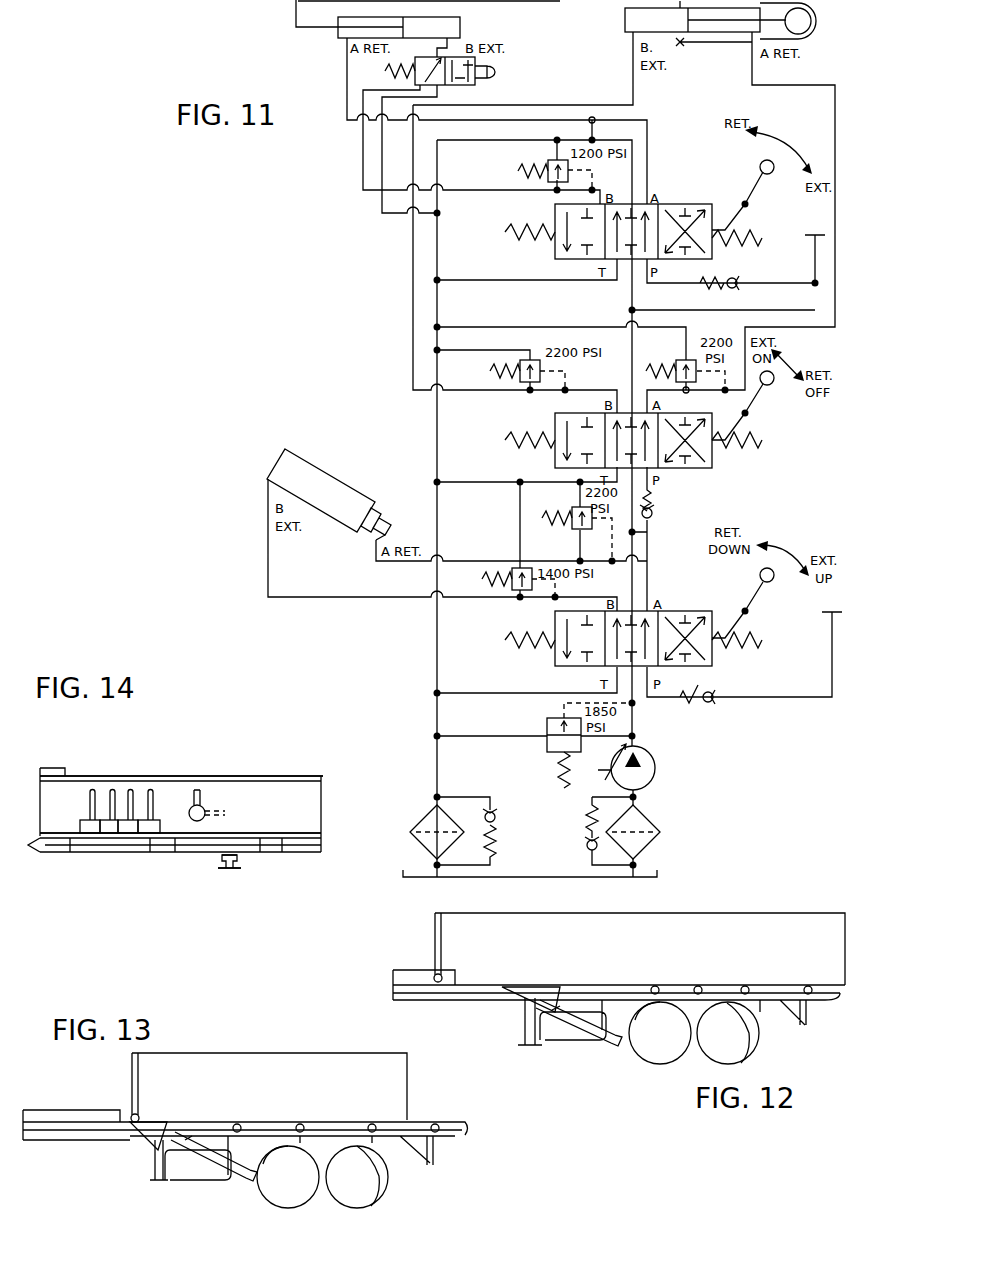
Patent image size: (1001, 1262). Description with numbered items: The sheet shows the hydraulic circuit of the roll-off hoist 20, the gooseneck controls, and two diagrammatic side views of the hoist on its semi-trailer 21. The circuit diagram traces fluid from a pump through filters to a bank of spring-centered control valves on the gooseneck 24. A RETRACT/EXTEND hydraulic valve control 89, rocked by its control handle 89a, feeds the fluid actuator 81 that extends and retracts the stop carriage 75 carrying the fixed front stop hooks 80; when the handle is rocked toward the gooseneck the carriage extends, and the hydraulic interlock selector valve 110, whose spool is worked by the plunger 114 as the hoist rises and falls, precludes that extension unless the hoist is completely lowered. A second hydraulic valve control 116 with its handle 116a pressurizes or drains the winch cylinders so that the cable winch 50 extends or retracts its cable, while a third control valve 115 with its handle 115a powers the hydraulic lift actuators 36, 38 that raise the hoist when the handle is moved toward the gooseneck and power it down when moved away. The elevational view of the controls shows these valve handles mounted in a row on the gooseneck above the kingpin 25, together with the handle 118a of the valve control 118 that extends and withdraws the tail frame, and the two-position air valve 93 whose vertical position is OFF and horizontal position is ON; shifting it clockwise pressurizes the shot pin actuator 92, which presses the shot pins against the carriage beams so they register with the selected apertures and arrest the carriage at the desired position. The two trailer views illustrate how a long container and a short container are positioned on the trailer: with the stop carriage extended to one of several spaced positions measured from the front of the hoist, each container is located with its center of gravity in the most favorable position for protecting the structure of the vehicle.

In FIG. 12, the roll-off hoist 20 is at (718, 990).
In FIG. 13, the roll-off hoist 20 is at (315, 1124).
In FIG. 12, the semi-trailer 21 is at (478, 998).
In FIG. 13, the semi-trailer 21 is at (106, 1138).
In FIG. 14, the gooseneck 24 is at (268, 780).
In FIG. 14, the kingpin 25 is at (234, 868).
In FIG. 11, the hydraulic lift actuator 36 is at (328, 473).
In FIG. 11, the hydraulic lift actuator 38 is at (329, 481).
In FIG. 11, the cable winch 50 is at (625, 17).
In FIG. 11, the stop carriage 75 is at (296, 17).
In FIG. 12, the stop hooks 80 is at (434, 974).
In FIG. 13, the stop hooks 80 is at (128, 1116).
In FIG. 11, the fluid actuator 81 is at (462, 28).
In FIG. 11, the hydraulic valve control 89 is at (555, 217).
In FIG. 14, the hydraulic valve control 89 is at (128, 825).
In FIG. 11, the control handle 89a is at (760, 166).
In FIG. 14, the control handle 89a is at (131, 788).
In FIG. 14, the shot pin actuator 92 is at (202, 796).
In FIG. 14, the two-position air valve 93 is at (206, 808).
In FIG. 11, the hydraulic interlock selector valve 110 is at (495, 82).
In FIG. 11, the plunger 114 is at (500, 67).
In FIG. 11, the control valve 115 is at (555, 629).
In FIG. 14, the control valve 115 is at (90, 825).
In FIG. 11, the control handle 115a is at (766, 582).
In FIG. 14, the control handle 115a is at (90, 788).
In FIG. 11, the hydraulic valve control 116 is at (555, 431).
In FIG. 14, the hydraulic valve control 116 is at (110, 825).
In FIG. 11, the control handle 116a is at (766, 386).
In FIG. 14, the control handle 116a is at (113, 788).
In FIG. 14, the valve control 118 is at (150, 825).
In FIG. 14, the control handle 118a is at (152, 790).